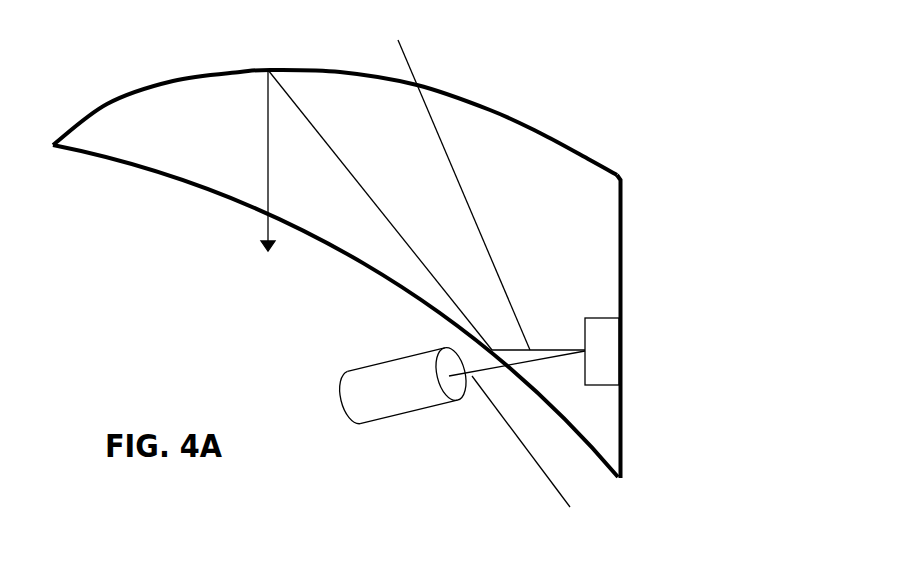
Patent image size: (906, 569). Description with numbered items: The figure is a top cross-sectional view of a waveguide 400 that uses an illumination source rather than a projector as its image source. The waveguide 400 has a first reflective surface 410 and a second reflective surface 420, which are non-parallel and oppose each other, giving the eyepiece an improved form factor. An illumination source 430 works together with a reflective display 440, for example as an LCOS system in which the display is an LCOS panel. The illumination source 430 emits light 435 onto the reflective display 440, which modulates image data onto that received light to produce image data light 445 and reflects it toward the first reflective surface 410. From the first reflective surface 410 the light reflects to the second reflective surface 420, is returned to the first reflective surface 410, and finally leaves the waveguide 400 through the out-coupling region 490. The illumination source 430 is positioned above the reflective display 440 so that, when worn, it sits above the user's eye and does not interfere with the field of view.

The waveguide 400 is at (336, 239).
The first reflective surface 410 is at (183, 178).
The second reflective surface 420 is at (158, 88).
The illumination source 430 is at (405, 385).
The light 435 is at (539, 461).
The reflective display 440 is at (605, 342).
The image data light 445 is at (450, 180).
The out-coupling region 490 is at (262, 213).